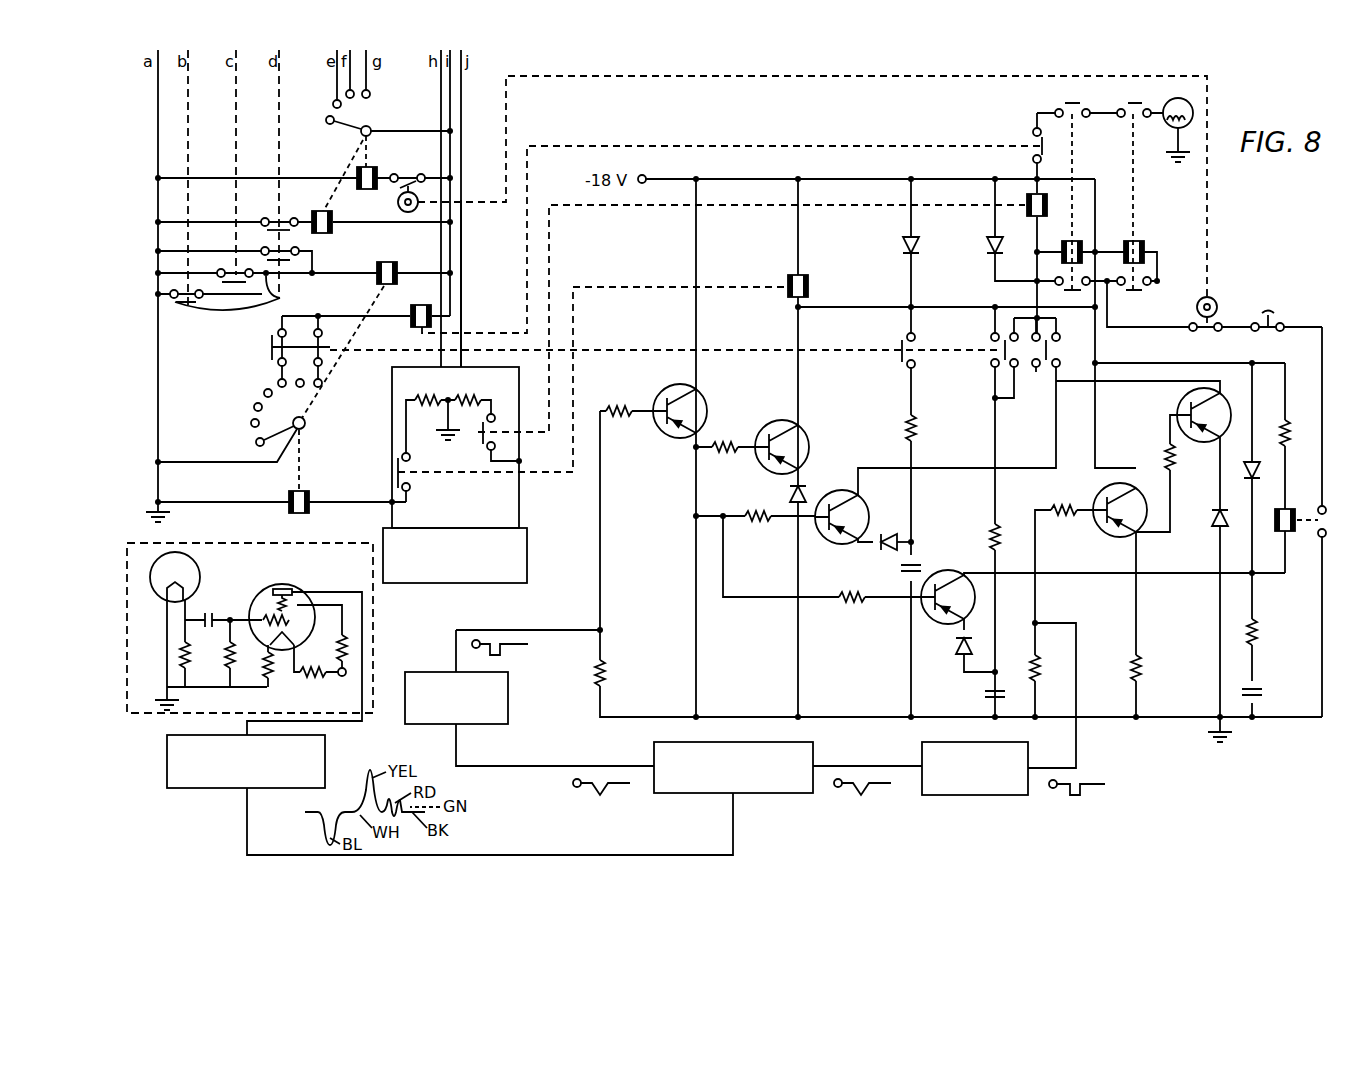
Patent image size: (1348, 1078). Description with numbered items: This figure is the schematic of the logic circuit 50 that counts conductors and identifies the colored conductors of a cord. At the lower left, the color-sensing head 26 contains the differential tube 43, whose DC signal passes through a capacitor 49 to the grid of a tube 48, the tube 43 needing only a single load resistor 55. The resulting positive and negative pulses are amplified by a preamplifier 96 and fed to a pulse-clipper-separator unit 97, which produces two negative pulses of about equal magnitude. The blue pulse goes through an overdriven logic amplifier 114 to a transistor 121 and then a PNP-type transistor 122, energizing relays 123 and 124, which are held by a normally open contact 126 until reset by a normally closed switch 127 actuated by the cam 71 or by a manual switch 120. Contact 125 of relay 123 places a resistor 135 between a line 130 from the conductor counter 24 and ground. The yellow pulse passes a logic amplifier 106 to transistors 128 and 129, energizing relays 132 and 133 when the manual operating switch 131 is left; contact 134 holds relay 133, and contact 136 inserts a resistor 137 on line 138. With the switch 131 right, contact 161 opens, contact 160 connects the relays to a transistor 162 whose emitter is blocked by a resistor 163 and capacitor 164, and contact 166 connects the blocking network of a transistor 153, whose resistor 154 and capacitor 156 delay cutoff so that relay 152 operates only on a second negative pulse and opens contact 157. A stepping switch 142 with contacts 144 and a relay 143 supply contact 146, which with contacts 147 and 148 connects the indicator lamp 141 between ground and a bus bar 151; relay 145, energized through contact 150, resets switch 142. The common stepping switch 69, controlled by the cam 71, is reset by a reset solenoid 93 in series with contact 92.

The conductor counter 24 is at (472, 475).
The color-sensing head 26 is at (269, 628).
The tube 43 is at (208, 628).
The tube 48 is at (304, 645).
The capacitor 49 is at (223, 604).
The logic circuit 50 is at (1302, 231).
The load resistor 55 is at (164, 653).
The common stepping switch 69 is at (388, 159).
The cam 71 is at (803, 199).
The normally open contact 92 is at (235, 233).
The reset solenoid 93 is at (304, 230).
The preamplifier 96 is at (242, 778).
The pulse-clipper-separator unit 97 is at (747, 786).
The logic amplifier 106 is at (1013, 789).
The overdriven logic amplifier 114 is at (529, 698).
The manual switch 120 is at (1292, 312).
The transistor 121 is at (653, 418).
The PNP-type transistor 122 is at (771, 454).
The relay 123 is at (820, 274).
The relay 124 is at (1139, 246).
The normally open contact 125 is at (593, 395).
The normally open contact 126 is at (1147, 221).
The normally closed switch 127 is at (1179, 318).
The transistor 128 is at (1087, 625).
The transistor 129 is at (1144, 561).
The line 130 is at (426, 208).
The manual operating switch 131 is at (604, 351).
The relay 132 is at (1015, 219).
The relay 133 is at (1066, 241).
The normally open contact 134 is at (1077, 210).
The resistor 135 is at (425, 412).
The normally open contact 136 is at (731, 338).
The resistor 137 is at (470, 405).
The line 138 is at (483, 283).
The indicator lamp 141 is at (1165, 130).
The stepping switch 142 is at (280, 465).
The relay 143 is at (661, 247).
The contacts 144 is at (236, 408).
The relay 145 is at (377, 328).
The normally open contact 146 is at (1012, 145).
The normally open contact 147 is at (1127, 99).
The normally open contact 148 is at (1068, 99).
The time-to-close contact 150 is at (239, 293).
The bus bar 151 is at (870, 168).
The relay 152 is at (1300, 468).
The transistor 153 is at (1004, 594).
The resistor 154 is at (971, 524).
The capacitor 156 is at (968, 685).
The normally closed contact 157 is at (1308, 522).
The contact 160 is at (1060, 342).
The contact 161 is at (1023, 395).
The transistor 162 is at (876, 469).
The resistor 163 is at (939, 424).
The capacitor 164 is at (933, 554).
The contact 166 is at (987, 352).